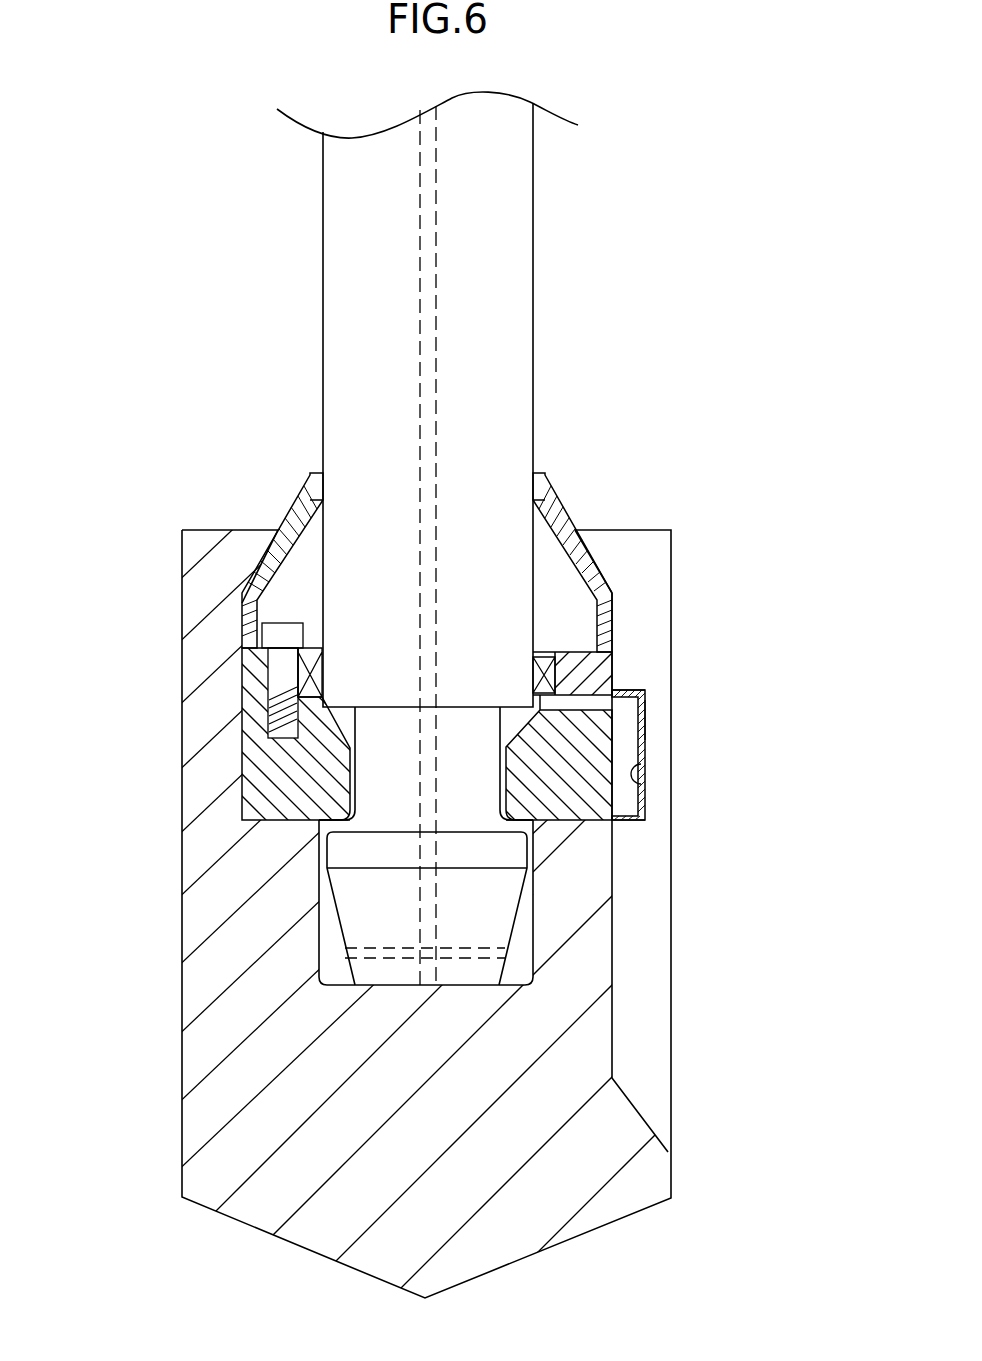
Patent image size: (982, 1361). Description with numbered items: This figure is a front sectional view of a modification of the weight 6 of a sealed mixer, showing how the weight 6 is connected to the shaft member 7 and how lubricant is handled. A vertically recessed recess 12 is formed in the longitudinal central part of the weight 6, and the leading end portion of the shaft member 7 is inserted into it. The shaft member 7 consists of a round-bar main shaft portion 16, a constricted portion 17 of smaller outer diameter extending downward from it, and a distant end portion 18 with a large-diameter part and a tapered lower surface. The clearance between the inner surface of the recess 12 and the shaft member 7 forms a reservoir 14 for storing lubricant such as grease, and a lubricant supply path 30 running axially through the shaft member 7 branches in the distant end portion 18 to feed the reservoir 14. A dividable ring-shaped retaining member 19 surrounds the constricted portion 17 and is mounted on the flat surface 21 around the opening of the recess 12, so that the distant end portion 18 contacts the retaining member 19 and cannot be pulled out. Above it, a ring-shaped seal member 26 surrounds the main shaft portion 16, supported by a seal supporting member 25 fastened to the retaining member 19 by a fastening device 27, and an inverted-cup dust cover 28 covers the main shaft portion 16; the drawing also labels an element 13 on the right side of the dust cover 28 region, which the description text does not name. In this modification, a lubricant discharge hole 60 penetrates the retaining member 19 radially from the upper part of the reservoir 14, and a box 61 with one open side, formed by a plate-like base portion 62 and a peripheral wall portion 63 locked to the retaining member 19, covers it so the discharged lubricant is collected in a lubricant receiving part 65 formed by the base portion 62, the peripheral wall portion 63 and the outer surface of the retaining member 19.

The weight 6 is at (588, 1053).
The shaft member 7 is at (608, 190).
The recess 12 is at (327, 955).
The lip seal (right) 13 is at (537, 608).
The reservoir 14 is at (520, 965).
The main shaft portion 16 is at (518, 263).
The constricted portion 17 is at (375, 798).
The distant end portion 18 is at (490, 913).
The retaining member 19 is at (560, 808).
The flat surface 21 is at (245, 767).
The seal supporting member 25 is at (268, 693).
The seal member 26 is at (292, 662).
The fastening device 27 is at (272, 637).
The dust cover 28 is at (272, 563).
The lubricant supply path 30 is at (435, 413).
The lubricant discharge hole 60 is at (578, 698).
The box 61 is at (650, 705).
The base portion 62 is at (645, 737).
The peripheral wall portion 63 is at (630, 690).
The lubricant receiving part 65 is at (640, 788).